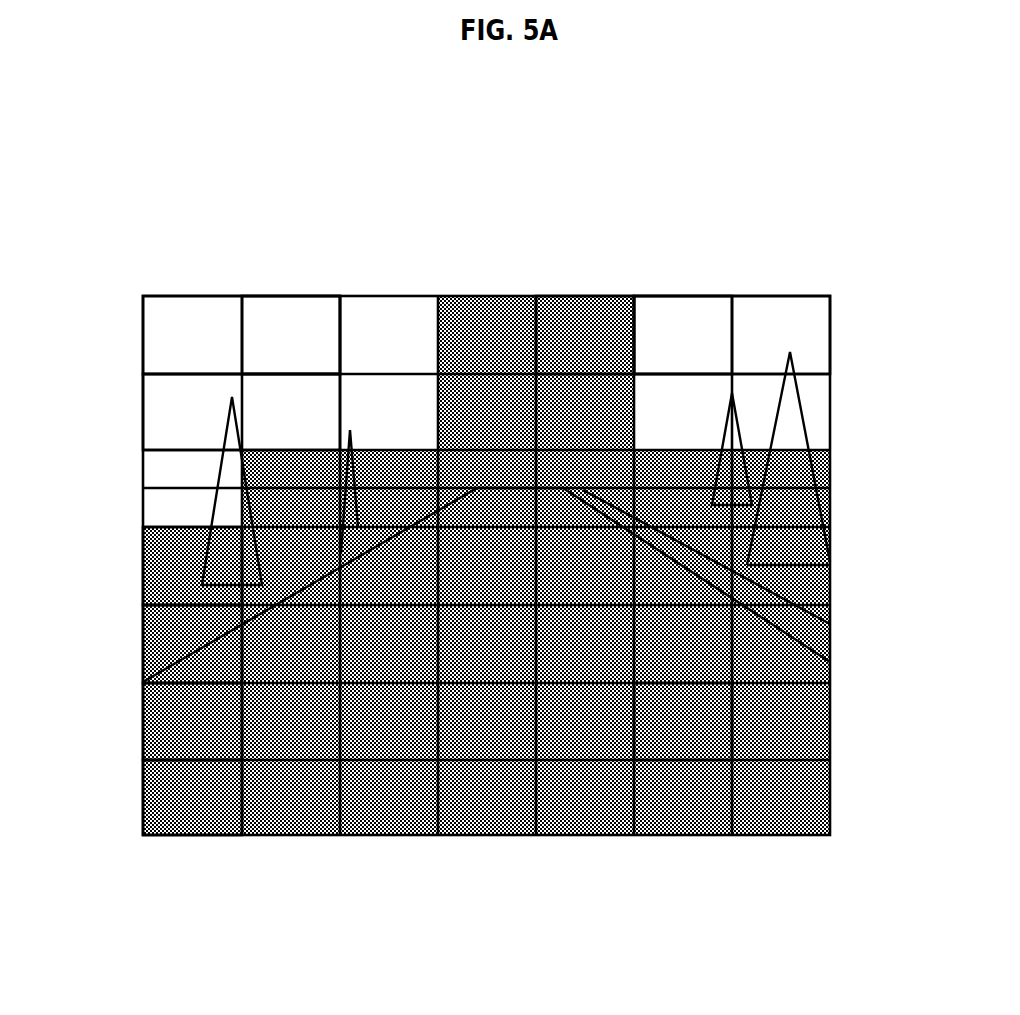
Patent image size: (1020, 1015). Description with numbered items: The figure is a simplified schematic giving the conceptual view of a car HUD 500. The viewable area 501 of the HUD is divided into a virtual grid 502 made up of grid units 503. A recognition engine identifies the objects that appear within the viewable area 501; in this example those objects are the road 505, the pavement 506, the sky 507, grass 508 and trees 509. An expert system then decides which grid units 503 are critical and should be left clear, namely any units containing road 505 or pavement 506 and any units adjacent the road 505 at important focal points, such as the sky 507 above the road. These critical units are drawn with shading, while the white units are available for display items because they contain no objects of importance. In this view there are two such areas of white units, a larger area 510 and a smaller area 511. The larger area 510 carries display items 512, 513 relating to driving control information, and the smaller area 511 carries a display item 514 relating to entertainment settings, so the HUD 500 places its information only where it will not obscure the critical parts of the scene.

The car HUD 500 is at (177, 224).
The viewable area 501 is at (143, 637).
The virtual grid 502 is at (237, 717).
The grid units 503 is at (180, 792).
The road 505 is at (653, 713).
The pavement 506 is at (813, 613).
The sky 507 is at (556, 345).
The grass 508 is at (165, 580).
The trees 509 is at (223, 499).
The larger area of white units 510 is at (322, 330).
The smaller area of white units 511 is at (673, 308).
The display item 512 is at (165, 329).
The display item 513 is at (165, 387).
The display item 514 is at (775, 330).